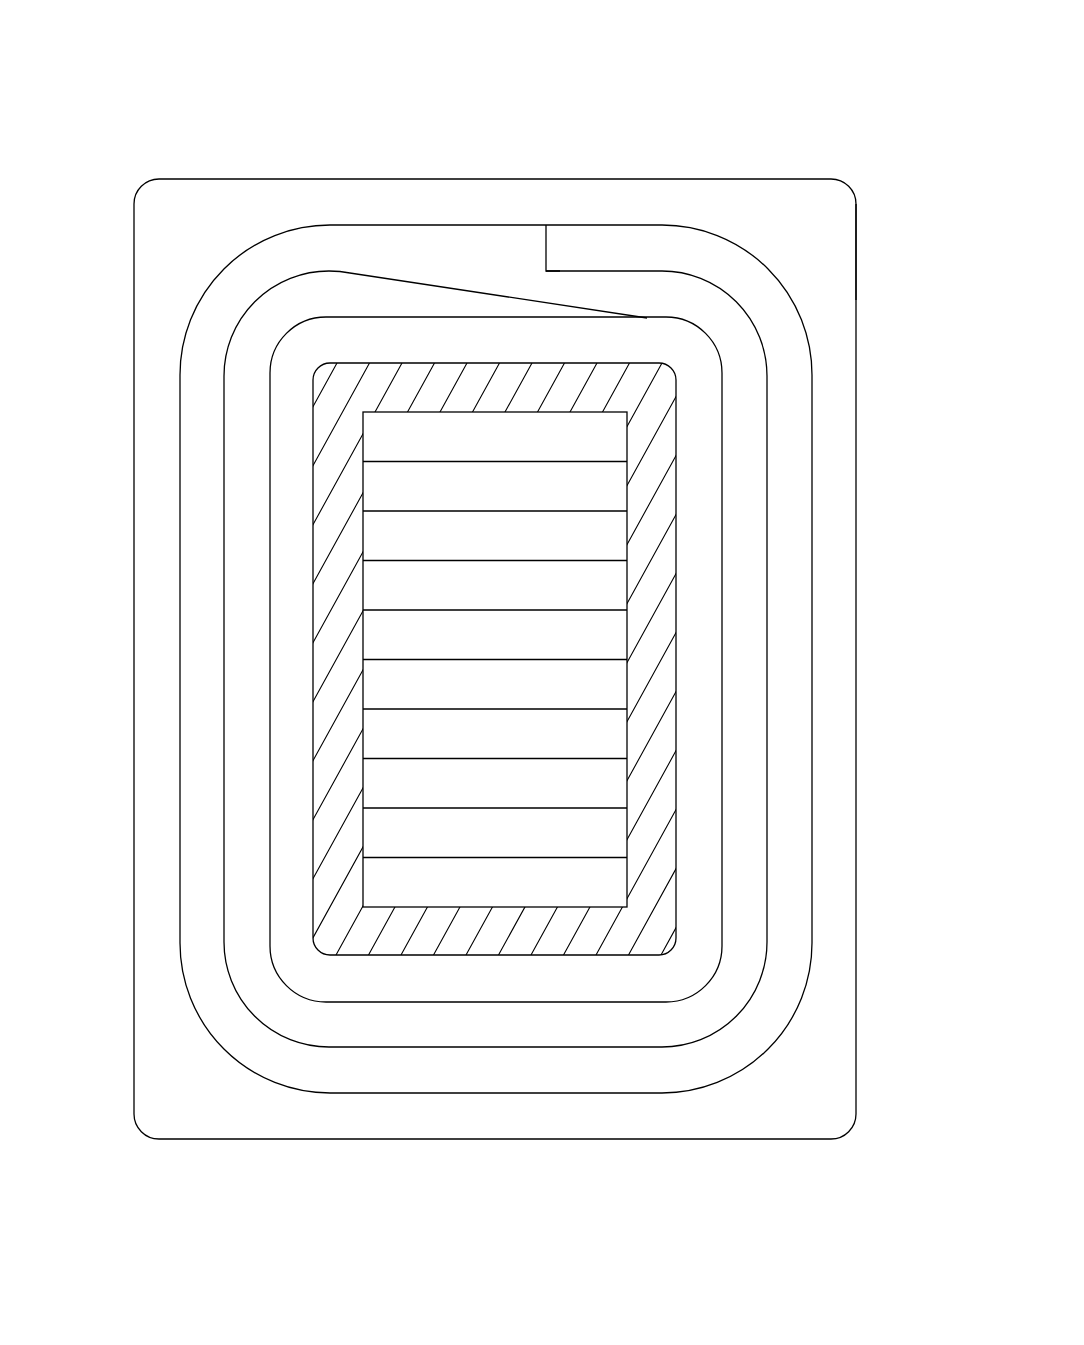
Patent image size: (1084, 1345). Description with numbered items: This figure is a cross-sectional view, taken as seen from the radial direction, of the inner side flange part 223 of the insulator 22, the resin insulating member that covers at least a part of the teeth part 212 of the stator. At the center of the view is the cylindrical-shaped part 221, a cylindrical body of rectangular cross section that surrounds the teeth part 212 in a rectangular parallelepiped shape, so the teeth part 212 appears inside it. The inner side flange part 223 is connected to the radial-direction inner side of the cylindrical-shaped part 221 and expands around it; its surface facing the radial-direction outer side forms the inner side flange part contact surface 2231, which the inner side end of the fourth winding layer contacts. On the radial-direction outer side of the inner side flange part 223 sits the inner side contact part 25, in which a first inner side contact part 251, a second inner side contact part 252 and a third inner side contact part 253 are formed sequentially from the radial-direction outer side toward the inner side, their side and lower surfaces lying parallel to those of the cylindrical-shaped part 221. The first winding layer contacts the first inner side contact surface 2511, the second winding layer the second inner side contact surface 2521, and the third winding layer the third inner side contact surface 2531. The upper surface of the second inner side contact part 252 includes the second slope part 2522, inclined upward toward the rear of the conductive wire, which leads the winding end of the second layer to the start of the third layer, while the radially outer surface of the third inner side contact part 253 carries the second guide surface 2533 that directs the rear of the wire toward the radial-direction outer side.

The insulator 22 is at (736, 146).
The inner side flange part 223 is at (180, 197).
The inner side flange part contact surface 2231 is at (842, 220).
The inner side contact part 25 is at (820, 433).
The first inner side contact part 251 is at (690, 712).
The second inner side contact part 252 is at (755, 793).
The third inner side contact part 253 is at (783, 848).
The first inner side contact surface 2511 is at (287, 511).
The second inner side contact surface 2521 is at (238, 556).
The third inner side contact surface 2531 is at (203, 620).
The second slope part 2522 is at (435, 283).
The second guide surface 2533 is at (602, 245).
The teeth part 212 is at (605, 583).
The cylindrical-shaped part 221 is at (488, 937).